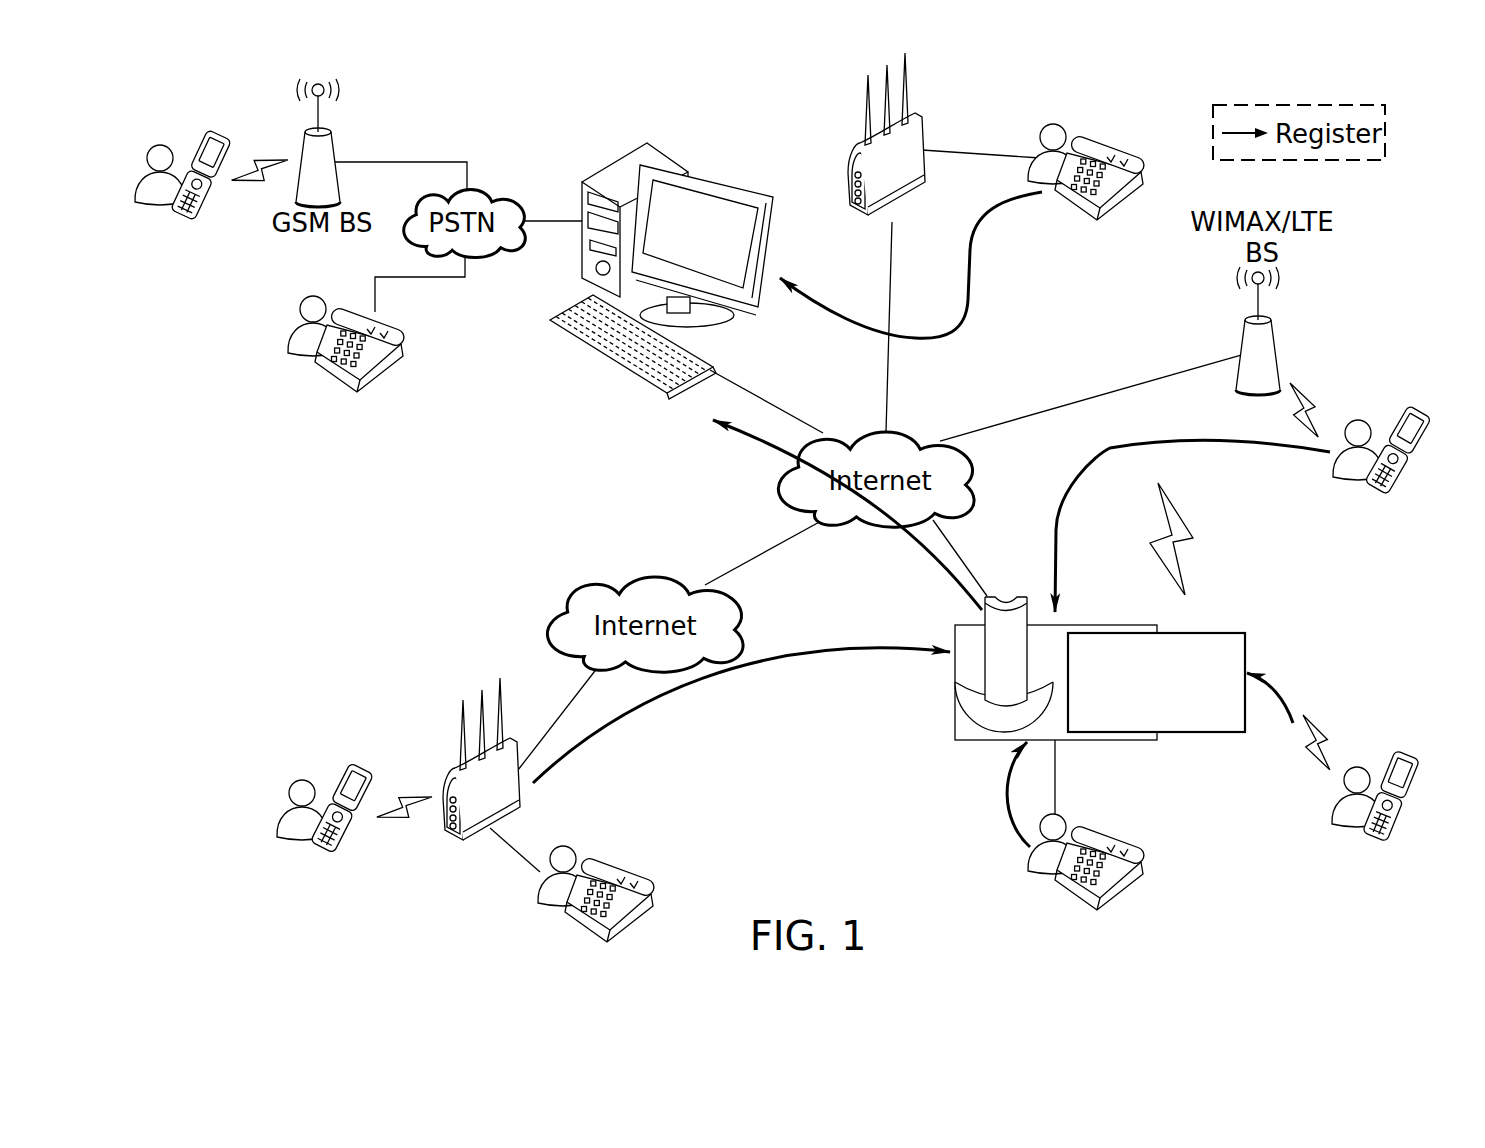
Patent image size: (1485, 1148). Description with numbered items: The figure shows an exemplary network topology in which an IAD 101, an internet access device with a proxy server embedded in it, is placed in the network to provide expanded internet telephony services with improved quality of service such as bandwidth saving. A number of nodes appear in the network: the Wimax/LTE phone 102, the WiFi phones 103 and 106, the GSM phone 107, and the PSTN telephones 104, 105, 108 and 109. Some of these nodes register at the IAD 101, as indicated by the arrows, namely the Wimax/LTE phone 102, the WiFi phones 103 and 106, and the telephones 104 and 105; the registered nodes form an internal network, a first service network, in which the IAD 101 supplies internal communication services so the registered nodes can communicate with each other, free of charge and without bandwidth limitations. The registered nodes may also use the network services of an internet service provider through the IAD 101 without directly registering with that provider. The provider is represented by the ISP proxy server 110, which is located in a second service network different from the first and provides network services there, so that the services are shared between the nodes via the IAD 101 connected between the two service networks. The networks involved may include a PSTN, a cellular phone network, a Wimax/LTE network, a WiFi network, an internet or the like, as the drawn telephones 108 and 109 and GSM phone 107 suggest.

The IAD 101 is at (1116, 624).
The Wimax/LTE phone 102 is at (1418, 406).
The WiFi phone 103 is at (1410, 753).
The PSTN telephone 104 is at (1122, 826).
The PSTN telephone 105 is at (632, 848).
The WiFi phone 106 is at (364, 768).
The GSM phone 107 is at (221, 128).
The PSTN telephone 108 is at (336, 392).
The PSTN telephone 109 is at (1120, 134).
The ISP proxy server 110 is at (738, 178).